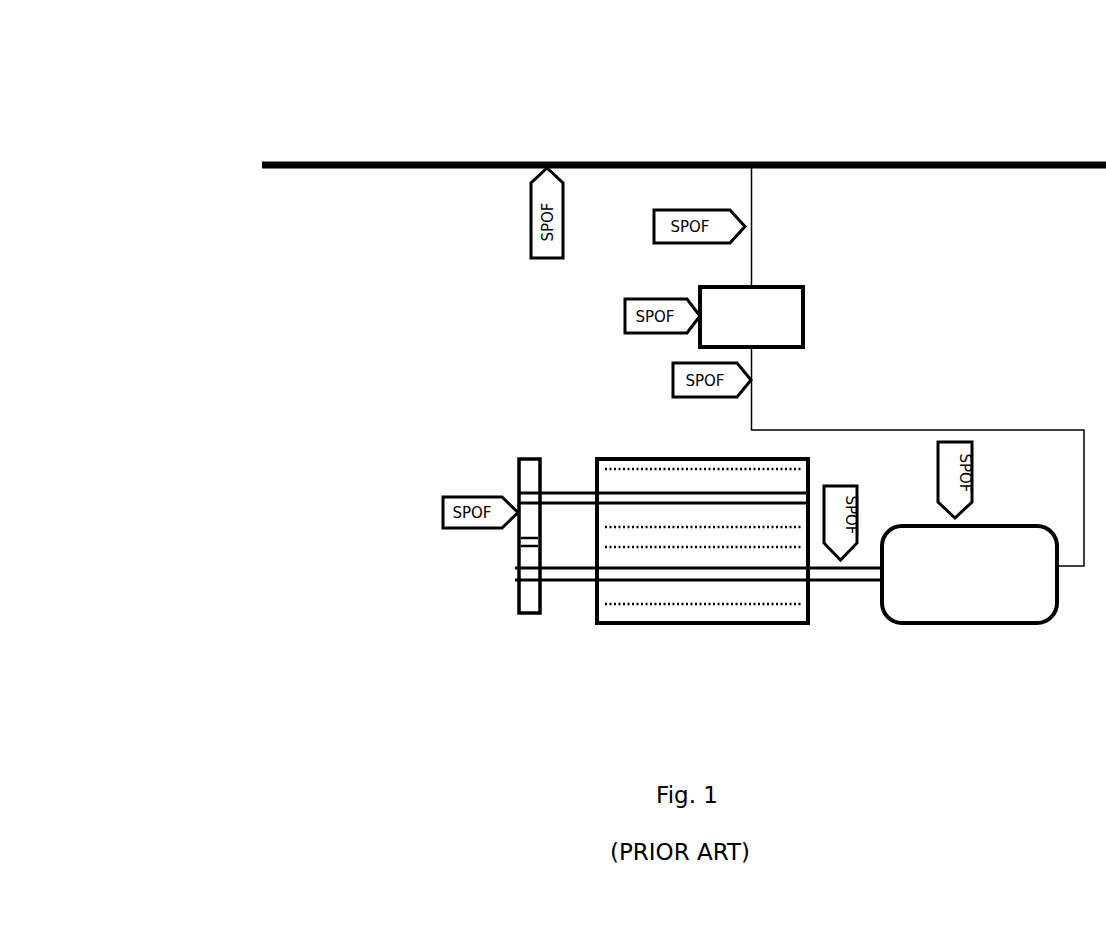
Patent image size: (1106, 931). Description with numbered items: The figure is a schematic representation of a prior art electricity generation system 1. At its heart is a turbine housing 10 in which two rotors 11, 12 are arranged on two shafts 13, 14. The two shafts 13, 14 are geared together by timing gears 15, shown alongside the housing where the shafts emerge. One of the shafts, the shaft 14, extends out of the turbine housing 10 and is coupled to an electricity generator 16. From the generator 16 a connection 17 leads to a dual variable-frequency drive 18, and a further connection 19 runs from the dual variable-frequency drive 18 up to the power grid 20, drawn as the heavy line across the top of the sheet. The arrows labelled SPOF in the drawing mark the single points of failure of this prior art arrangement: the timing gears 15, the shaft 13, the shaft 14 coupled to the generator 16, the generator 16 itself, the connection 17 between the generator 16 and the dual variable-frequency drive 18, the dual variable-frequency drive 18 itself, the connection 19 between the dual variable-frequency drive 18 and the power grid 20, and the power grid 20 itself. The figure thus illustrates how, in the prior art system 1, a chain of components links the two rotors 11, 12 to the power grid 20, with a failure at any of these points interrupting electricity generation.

The electricity generation system 1 is at (263, 127).
The turbine housing 10 is at (588, 458).
The rotor 11 is at (643, 478).
The rotor 12 is at (643, 593).
The shaft 13 is at (563, 488).
The shaft 14 is at (572, 592).
The timing gears 15 is at (510, 565).
The electricity generator 16 is at (902, 633).
The connection 17 is at (1007, 422).
The dual variable-frequency drive 18 is at (795, 278).
The connection 19 is at (767, 248).
The power grid 20 is at (480, 147).